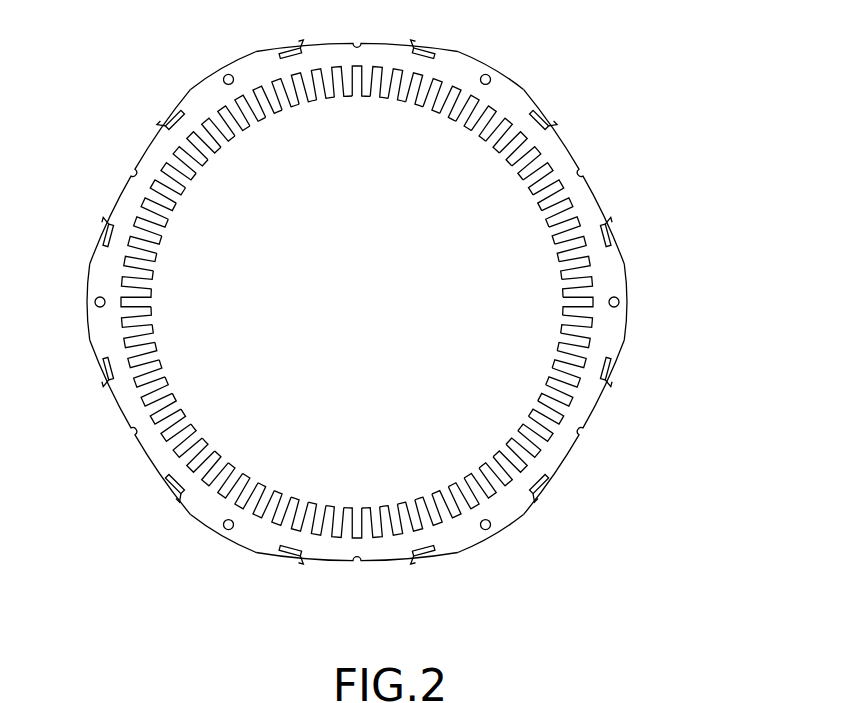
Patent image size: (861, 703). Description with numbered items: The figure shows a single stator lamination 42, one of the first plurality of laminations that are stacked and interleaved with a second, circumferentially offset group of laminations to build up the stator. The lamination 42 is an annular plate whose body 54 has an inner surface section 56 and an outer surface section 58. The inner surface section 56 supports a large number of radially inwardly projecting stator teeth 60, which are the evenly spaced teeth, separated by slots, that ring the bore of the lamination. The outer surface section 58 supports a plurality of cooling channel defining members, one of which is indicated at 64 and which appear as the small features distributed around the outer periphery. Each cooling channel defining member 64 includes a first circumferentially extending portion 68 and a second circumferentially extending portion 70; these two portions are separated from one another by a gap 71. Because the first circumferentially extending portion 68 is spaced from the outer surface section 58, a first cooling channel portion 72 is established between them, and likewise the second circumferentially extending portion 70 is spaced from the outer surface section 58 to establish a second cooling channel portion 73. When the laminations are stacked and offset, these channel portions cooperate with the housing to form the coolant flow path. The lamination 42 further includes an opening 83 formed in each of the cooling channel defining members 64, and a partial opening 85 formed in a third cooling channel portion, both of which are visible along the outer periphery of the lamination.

The stator lamination 42 is at (663, 500).
The body 54 is at (540, 137).
The inner surface section 56 is at (553, 363).
The outer surface section 58 is at (389, 46).
The stator teeth 60 is at (531, 422).
The cooling channel defining member 64 is at (613, 325).
The first circumferentially extending portion 68 is at (552, 490).
The second circumferentially extending portion 70 is at (173, 497).
The gap 71 is at (93, 215).
The first cooling channel portion 72 is at (547, 490).
The second cooling channel portion 73 is at (168, 490).
The opening 83 is at (227, 527).
The partial opening 85 is at (357, 562).